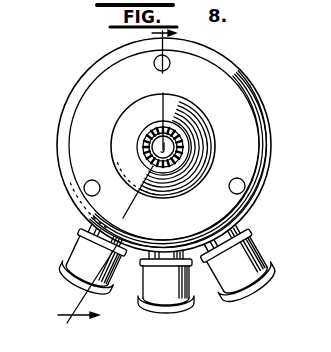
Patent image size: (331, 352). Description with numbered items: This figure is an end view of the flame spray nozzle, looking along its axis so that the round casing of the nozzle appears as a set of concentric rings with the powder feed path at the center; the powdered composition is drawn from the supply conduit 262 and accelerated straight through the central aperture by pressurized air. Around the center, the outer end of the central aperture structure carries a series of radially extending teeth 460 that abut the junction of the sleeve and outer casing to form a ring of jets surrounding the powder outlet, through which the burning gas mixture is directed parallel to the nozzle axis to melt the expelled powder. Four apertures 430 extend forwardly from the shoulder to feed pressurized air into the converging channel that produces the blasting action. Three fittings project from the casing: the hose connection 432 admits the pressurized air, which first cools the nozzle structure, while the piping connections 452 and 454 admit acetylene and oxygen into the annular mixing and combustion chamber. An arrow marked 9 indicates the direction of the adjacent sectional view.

The section view direction arrow 9 is at (171, 34).
The supply conduit 262 is at (194, 141).
The apertures 430 is at (176, 125).
The radially extending teeth 460 is at (137, 148).
The hose connection 432 is at (188, 306).
The piping connection 452 is at (67, 268).
The piping connection 454 is at (273, 262).